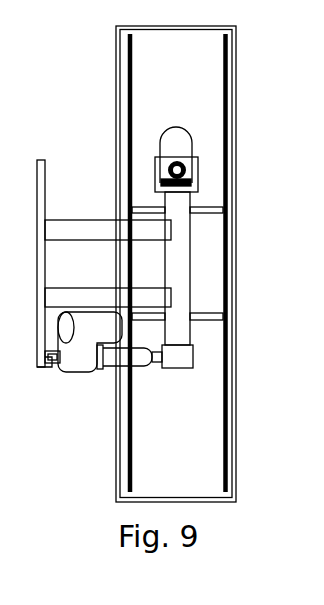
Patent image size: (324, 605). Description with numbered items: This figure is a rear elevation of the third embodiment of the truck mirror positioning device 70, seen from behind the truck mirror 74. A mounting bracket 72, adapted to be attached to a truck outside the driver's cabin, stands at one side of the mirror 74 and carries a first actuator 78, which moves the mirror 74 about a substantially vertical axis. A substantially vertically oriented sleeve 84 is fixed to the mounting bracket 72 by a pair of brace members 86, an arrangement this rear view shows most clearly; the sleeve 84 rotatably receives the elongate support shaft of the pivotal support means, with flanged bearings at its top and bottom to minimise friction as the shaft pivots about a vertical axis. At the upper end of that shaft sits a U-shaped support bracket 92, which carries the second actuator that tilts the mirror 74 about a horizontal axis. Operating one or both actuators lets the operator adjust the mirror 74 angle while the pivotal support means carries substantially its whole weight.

The truck mirror positioning device 70 is at (180, 294).
The mounting bracket 72 is at (47, 172).
The truck mirror 74 is at (237, 472).
The first actuator 78 is at (79, 378).
The sleeve 84 is at (188, 263).
The brace members 86 is at (77, 295).
The U-shaped support bracket 92 is at (200, 180).